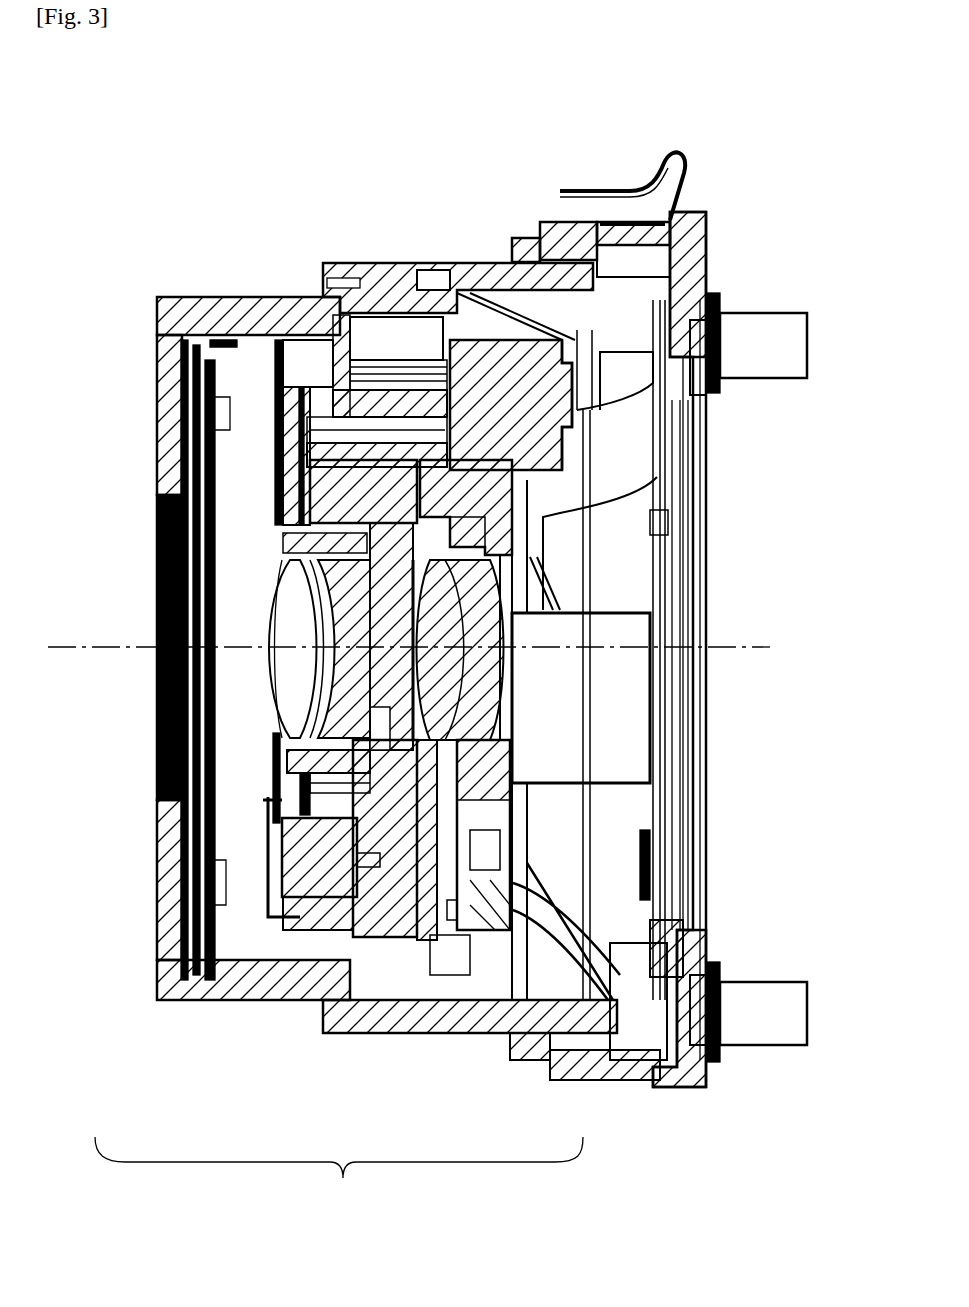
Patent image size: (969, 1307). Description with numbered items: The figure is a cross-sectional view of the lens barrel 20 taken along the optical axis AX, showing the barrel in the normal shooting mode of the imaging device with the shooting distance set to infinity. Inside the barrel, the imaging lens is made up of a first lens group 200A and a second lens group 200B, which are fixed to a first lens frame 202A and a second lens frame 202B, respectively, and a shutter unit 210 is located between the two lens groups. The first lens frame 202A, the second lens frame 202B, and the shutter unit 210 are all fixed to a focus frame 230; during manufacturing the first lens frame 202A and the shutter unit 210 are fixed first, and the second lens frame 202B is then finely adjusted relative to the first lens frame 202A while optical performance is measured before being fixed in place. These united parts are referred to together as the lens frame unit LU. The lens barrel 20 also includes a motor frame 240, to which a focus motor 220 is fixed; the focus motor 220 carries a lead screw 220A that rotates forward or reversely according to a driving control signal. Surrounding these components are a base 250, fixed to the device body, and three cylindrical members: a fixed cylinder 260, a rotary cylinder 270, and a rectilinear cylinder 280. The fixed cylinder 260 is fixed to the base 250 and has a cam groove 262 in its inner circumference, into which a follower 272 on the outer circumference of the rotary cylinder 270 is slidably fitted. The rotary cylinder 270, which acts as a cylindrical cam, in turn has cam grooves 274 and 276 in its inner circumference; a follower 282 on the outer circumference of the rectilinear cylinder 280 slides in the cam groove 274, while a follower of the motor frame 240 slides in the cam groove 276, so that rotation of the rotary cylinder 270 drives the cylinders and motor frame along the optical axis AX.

The lens barrel 20 is at (608, 160).
The focus motor 220 is at (485, 348).
The lead screw 220A is at (366, 407).
The fixed cylinder 260 is at (540, 230).
The follower 282 is at (447, 282).
The follower 272 is at (538, 258).
The base 250 is at (710, 245).
The rotary cylinder 270 is at (362, 300).
The cam groove 262 is at (512, 262).
The cam groove 274 is at (425, 290).
The rectilinear cylinder 280 is at (245, 296).
The cam groove 276 is at (612, 812).
The motor frame 240 is at (503, 918).
The first lens group 200A is at (262, 728).
The first lens frame 202A is at (295, 862).
The shutter unit 210 is at (383, 888).
The focus frame 230 is at (470, 860).
The second lens group 200B is at (482, 800).
The second lens frame 202B is at (477, 800).
The optical axis AX is at (120, 645).
The lens frame unit LU is at (339, 1174).